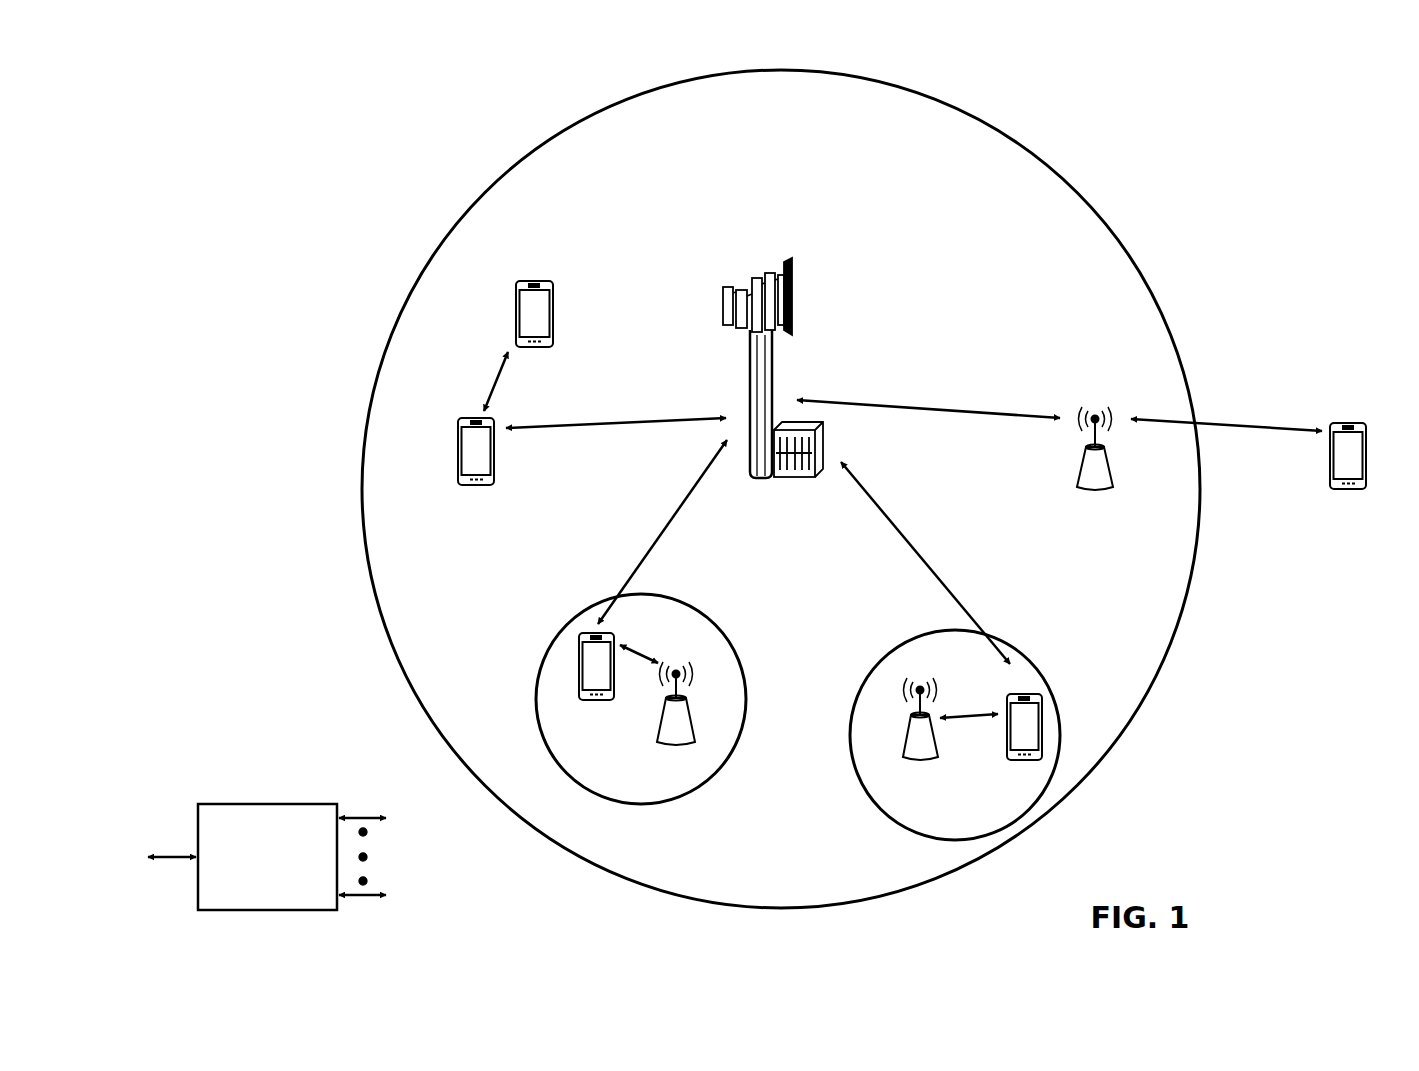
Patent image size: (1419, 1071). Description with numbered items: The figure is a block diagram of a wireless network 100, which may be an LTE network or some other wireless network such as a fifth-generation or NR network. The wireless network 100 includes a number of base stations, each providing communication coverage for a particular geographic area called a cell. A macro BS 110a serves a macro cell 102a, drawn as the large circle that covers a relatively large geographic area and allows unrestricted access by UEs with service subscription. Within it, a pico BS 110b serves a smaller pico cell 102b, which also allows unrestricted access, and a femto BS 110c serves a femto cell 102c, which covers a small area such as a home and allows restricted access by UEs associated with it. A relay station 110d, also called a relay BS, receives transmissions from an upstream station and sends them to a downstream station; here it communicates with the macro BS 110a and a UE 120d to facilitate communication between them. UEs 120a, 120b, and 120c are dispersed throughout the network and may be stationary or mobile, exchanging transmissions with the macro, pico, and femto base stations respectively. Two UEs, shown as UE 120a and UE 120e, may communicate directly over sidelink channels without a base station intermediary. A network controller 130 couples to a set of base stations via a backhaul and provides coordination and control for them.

The wireless network 100 is at (245, 62).
The macro cell 102a is at (1056, 172).
The pico cell 102b is at (738, 636).
The femto cell 102c is at (888, 644).
The macro BS 110a is at (770, 268).
The pico BS 110b is at (697, 735).
The femto BS 110c is at (903, 752).
The relay station 110d is at (1094, 408).
The UE 120a is at (458, 448).
The UE 120b is at (585, 700).
The UE 120c is at (1010, 761).
The UE 120d is at (1360, 423).
The UE 120e is at (516, 302).
The network controller 130 is at (266, 803).